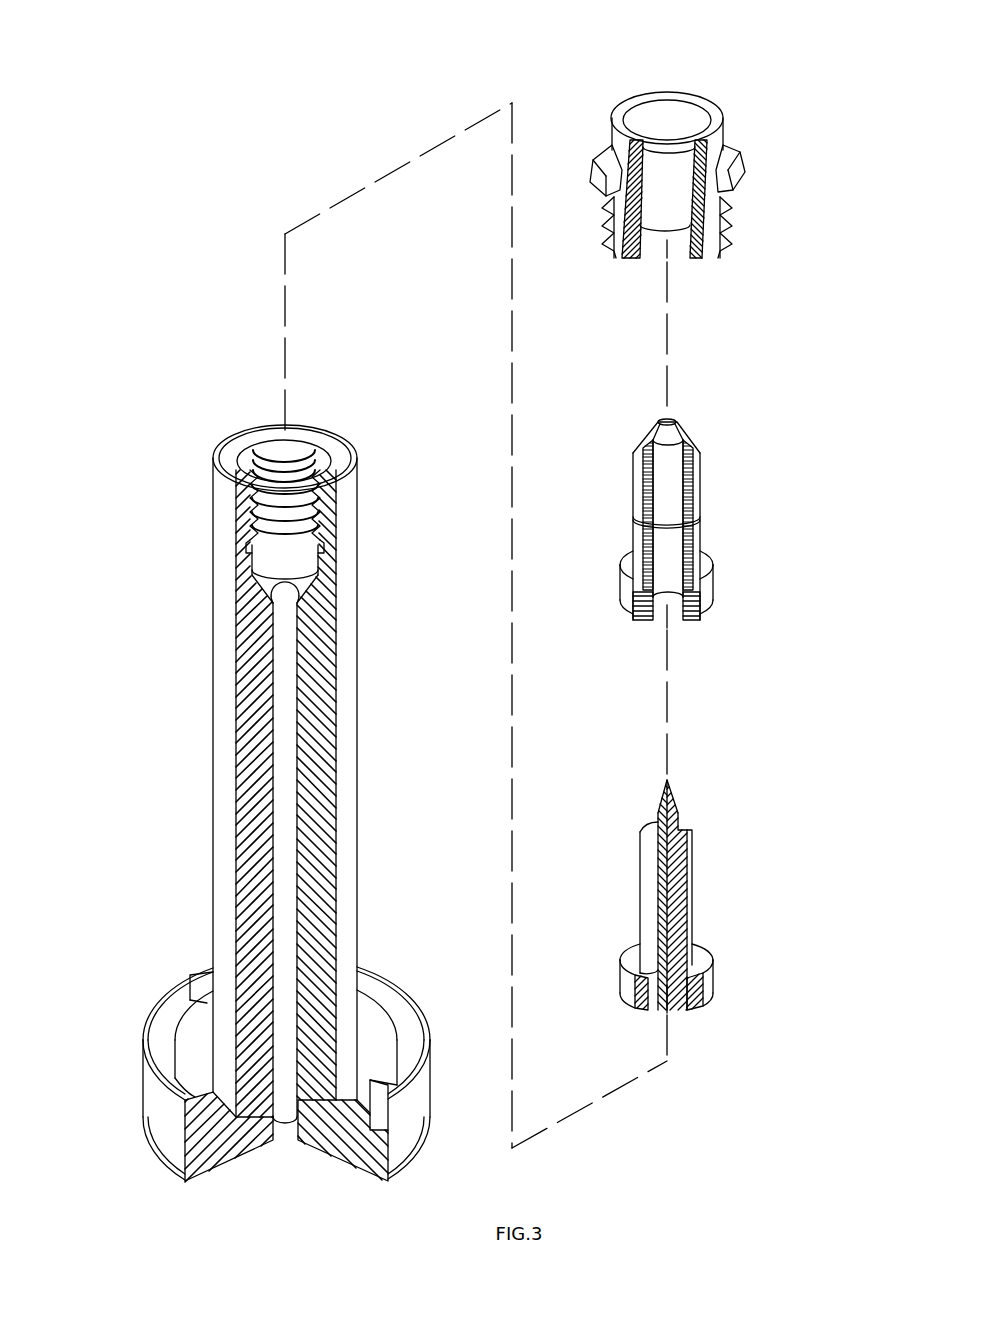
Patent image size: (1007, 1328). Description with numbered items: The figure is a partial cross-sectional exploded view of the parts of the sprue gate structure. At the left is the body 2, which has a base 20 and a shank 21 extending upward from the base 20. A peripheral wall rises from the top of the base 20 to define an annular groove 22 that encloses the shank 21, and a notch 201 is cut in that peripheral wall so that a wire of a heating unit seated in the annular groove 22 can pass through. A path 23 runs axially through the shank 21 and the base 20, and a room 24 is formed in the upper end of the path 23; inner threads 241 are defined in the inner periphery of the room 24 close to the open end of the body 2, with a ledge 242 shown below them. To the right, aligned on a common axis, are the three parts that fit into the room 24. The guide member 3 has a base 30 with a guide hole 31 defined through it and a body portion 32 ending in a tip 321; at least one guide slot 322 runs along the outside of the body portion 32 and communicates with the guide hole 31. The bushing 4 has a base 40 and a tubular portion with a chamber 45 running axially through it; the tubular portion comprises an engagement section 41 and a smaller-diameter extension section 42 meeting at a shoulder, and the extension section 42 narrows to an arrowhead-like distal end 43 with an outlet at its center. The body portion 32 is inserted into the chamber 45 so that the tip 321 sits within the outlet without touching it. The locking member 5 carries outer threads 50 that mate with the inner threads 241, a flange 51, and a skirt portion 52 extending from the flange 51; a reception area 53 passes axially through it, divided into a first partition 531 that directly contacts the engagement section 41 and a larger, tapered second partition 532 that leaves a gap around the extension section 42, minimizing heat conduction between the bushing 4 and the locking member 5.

The body 2 is at (200, 659).
The base 20 is at (160, 1115).
The notch 201 is at (190, 980).
The shank 21 is at (232, 828).
The annular groove 22 is at (205, 1055).
The path 23 is at (283, 707).
The room 24 is at (262, 582).
The inner threads 241 is at (280, 457).
The ledge 242 is at (325, 545).
The guide member 3 is at (622, 838).
The base 30 is at (623, 987).
The guide hole 31 is at (650, 970).
The body portion 32 is at (687, 868).
The tip 321 is at (657, 805).
The guide slot 322 is at (658, 893).
The bushing 4 is at (615, 438).
The base 40 is at (632, 605).
The engagement section 41 is at (637, 545).
The extension section 42 is at (638, 476).
The distal end 43 is at (690, 440).
The chamber 45 is at (660, 482).
The locking member 5 is at (610, 81).
The outer threads 50 is at (720, 237).
The flange 51 is at (735, 172).
The skirt portion 52 is at (715, 122).
The reception area 53 is at (640, 42).
The first partition 531 is at (658, 175).
The second partition 532 is at (688, 120).